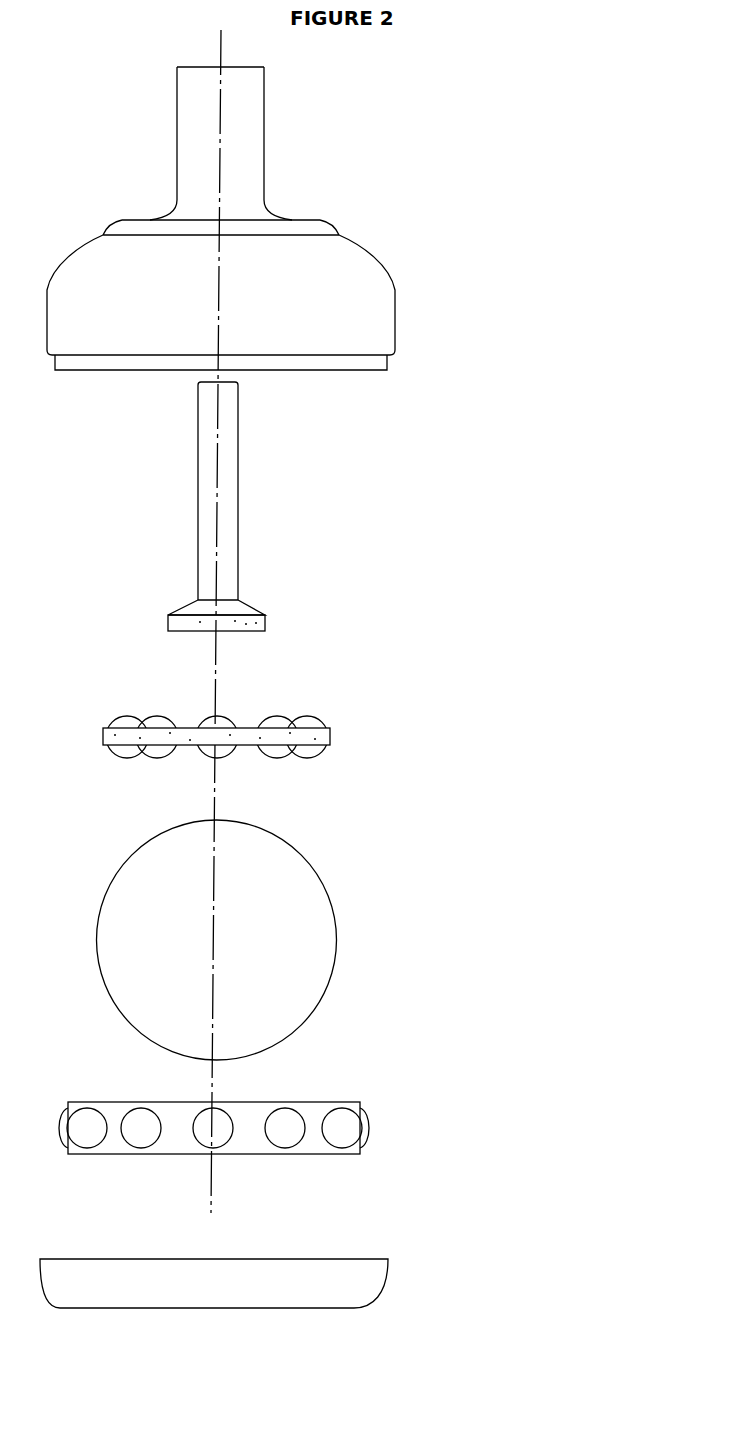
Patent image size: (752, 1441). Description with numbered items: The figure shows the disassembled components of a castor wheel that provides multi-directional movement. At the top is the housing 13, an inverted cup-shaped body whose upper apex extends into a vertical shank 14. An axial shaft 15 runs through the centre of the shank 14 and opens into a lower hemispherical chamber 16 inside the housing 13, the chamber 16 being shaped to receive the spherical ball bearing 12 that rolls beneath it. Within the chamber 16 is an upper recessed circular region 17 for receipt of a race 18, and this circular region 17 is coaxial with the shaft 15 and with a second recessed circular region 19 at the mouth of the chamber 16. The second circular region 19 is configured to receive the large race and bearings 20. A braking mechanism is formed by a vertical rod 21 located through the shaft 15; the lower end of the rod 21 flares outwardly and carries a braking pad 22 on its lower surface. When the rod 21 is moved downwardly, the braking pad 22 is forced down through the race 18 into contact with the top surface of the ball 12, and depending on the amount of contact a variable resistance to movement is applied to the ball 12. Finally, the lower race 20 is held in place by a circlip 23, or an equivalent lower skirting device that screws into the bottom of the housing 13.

The spherical ball bearing 12 is at (283, 944).
The housing 13 is at (375, 293).
The vertical shank 14 is at (263, 185).
The axial shaft 15 is at (235, 131).
The hemispherical chamber 16 is at (288, 303).
The upper recessed circular region 17 is at (335, 252).
The race 18 is at (338, 729).
The second recessed circular region 19 is at (387, 365).
The large race and bearings 20 is at (374, 1122).
The vertical rod 21 is at (218, 513).
The braking pad 22 is at (280, 632).
The circlip 23 is at (376, 1270).